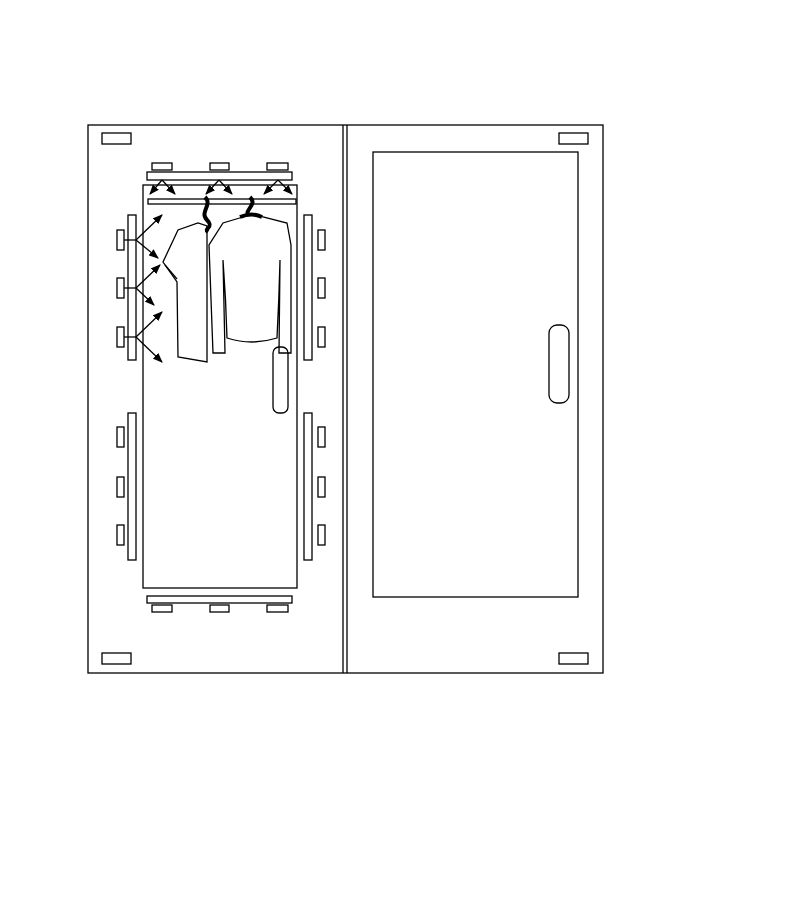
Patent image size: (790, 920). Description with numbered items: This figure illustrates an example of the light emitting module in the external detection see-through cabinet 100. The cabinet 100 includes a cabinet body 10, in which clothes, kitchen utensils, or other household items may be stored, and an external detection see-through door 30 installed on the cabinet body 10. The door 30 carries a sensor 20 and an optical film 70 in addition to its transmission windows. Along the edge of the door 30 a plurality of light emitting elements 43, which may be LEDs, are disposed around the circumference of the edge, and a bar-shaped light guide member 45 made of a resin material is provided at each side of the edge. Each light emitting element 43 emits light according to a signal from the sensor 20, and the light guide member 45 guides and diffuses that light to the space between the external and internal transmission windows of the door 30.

The external detection see-through cabinet 100 is at (368, 37).
The cabinet body 10 is at (603, 421).
The sensor 20 is at (107, 132).
The external detection see-through door 30 is at (578, 222).
The optical film 70 is at (558, 303).
The light emitting element 43 is at (209, 163).
The light guide member 45 is at (243, 172).